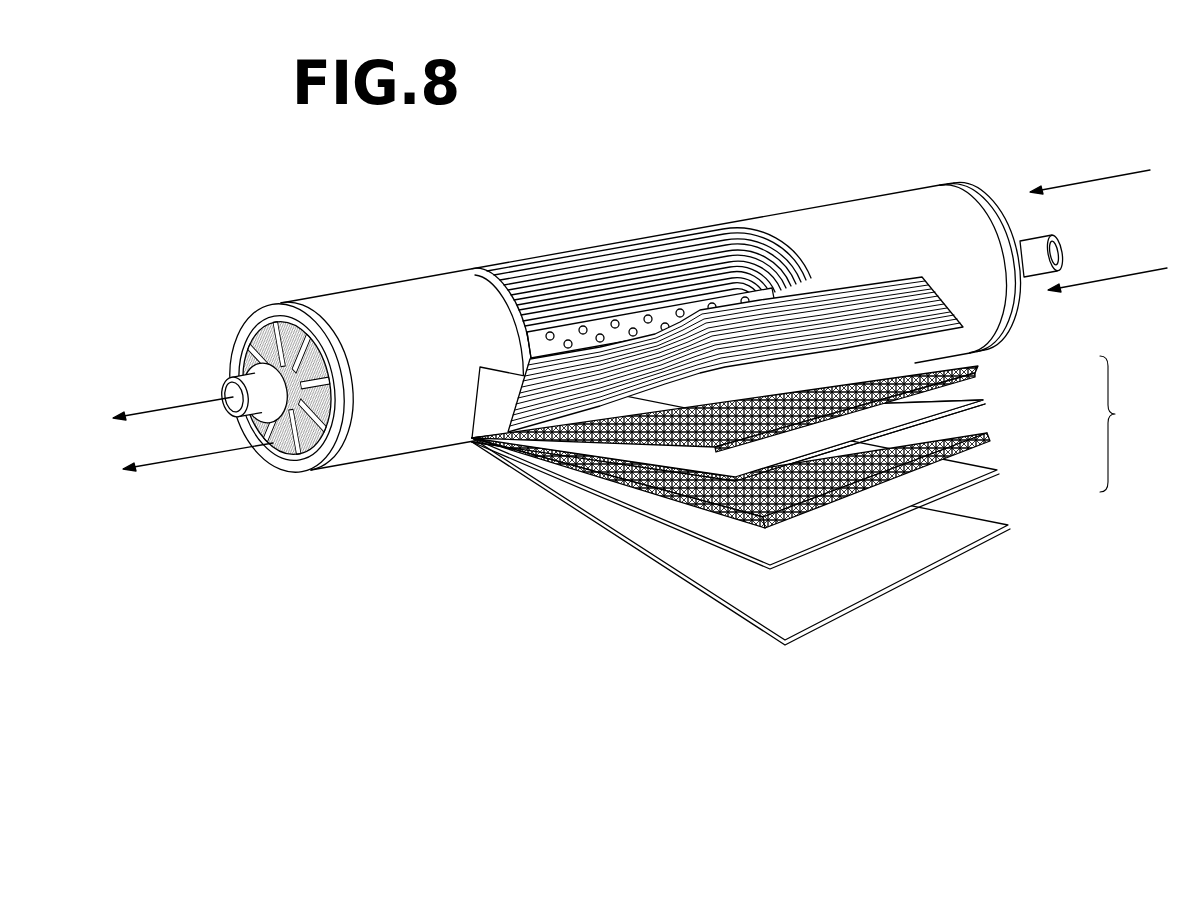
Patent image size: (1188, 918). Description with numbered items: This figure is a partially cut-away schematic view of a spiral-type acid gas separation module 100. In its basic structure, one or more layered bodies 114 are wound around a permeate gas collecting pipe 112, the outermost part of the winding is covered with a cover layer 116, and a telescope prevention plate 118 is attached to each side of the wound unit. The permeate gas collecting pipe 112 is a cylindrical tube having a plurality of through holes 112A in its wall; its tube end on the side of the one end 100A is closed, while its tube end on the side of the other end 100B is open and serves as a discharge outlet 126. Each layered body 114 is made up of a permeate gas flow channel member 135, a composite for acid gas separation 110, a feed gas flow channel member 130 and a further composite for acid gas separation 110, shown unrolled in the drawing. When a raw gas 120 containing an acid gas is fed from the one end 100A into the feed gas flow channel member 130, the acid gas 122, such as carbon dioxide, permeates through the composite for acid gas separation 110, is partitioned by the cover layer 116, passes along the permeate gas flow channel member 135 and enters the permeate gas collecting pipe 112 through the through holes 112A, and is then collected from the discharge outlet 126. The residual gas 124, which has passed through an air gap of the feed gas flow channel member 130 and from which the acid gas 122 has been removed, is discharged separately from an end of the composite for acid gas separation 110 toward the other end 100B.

The acid gas separation module 100 is at (955, 80).
The one end 100A is at (1024, 325).
The other end 100B is at (285, 470).
The composite for acid gas separation 110 is at (973, 457).
The permeate gas collecting pipe 112 is at (722, 296).
The through holes 112A is at (556, 345).
The layered body 114 is at (833, 384).
The cover layer 116 is at (1012, 522).
The telescope prevention plate 118 is at (278, 306).
The raw gas 120 is at (1080, 180).
The acid gas 122 is at (157, 408).
The residual gas 124 is at (172, 460).
The discharge outlet 126 is at (228, 420).
The feed gas flow channel member 130 is at (963, 420).
The permeate gas flow channel member 135 is at (957, 358).